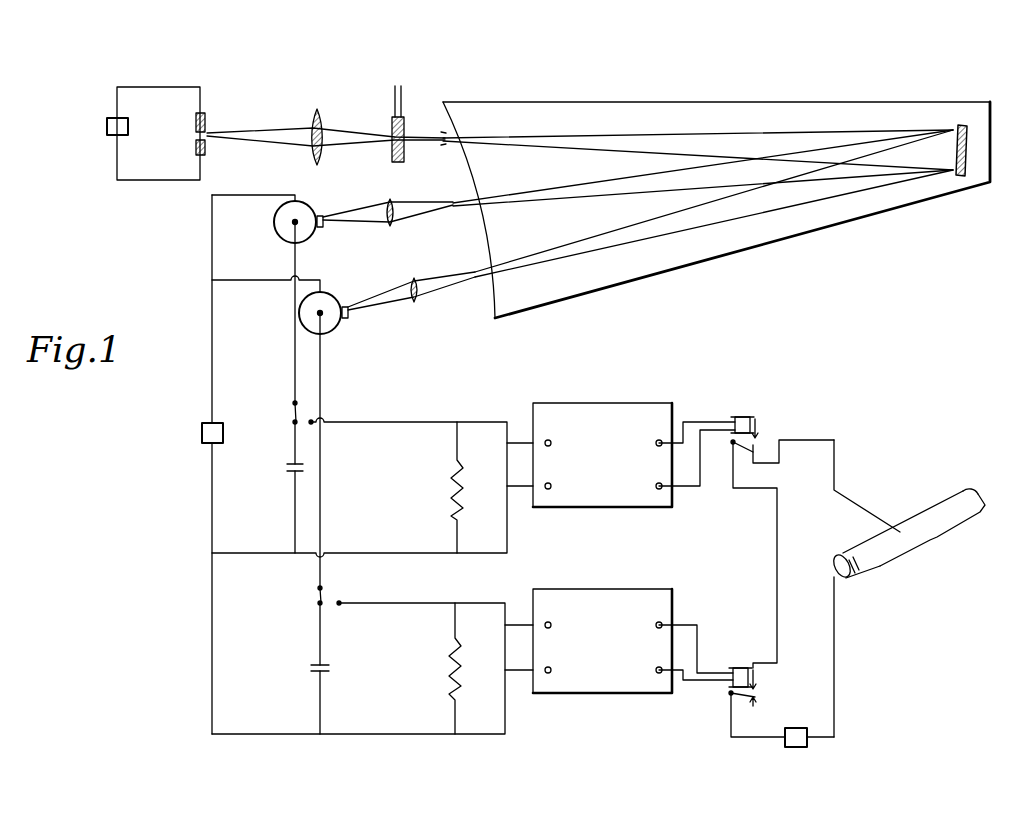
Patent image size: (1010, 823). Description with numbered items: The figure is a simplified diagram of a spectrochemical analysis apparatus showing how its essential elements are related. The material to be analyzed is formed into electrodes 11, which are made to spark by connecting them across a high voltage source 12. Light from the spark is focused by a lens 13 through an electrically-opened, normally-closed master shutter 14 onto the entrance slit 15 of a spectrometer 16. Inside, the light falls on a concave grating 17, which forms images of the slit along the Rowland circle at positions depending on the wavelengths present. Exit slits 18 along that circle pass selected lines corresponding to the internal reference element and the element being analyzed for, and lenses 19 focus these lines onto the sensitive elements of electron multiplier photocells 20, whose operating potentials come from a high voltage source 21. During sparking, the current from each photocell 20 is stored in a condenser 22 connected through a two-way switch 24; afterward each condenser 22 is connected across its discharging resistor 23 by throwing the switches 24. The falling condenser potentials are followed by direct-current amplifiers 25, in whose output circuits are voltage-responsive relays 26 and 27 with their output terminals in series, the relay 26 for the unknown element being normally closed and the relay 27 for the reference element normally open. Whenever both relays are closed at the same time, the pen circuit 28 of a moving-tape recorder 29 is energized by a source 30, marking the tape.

The electrodes 11 is at (196, 120).
The high voltage source 12 is at (107, 124).
The lens 13 is at (313, 124).
The master shutter 14 is at (392, 130).
The entrance slit 15 is at (443, 126).
The spectrometer 16 is at (565, 102).
The concave grating 17 is at (960, 178).
The exit slits 18 is at (452, 200).
The lenses 19 is at (388, 228).
The electron multiplier photocells 20 is at (308, 240).
The high voltage source 21 is at (202, 432).
The condenser 22 is at (288, 468).
The discharging resistor 23 is at (454, 502).
The two-way switch 24 is at (292, 420).
The direct-current amplifiers 25 is at (612, 508).
The relay 26 is at (740, 416).
The relay 27 is at (738, 667).
The pen circuit 28 is at (835, 476).
The moving-tape recorder 29 is at (866, 575).
The source 30 is at (812, 705).